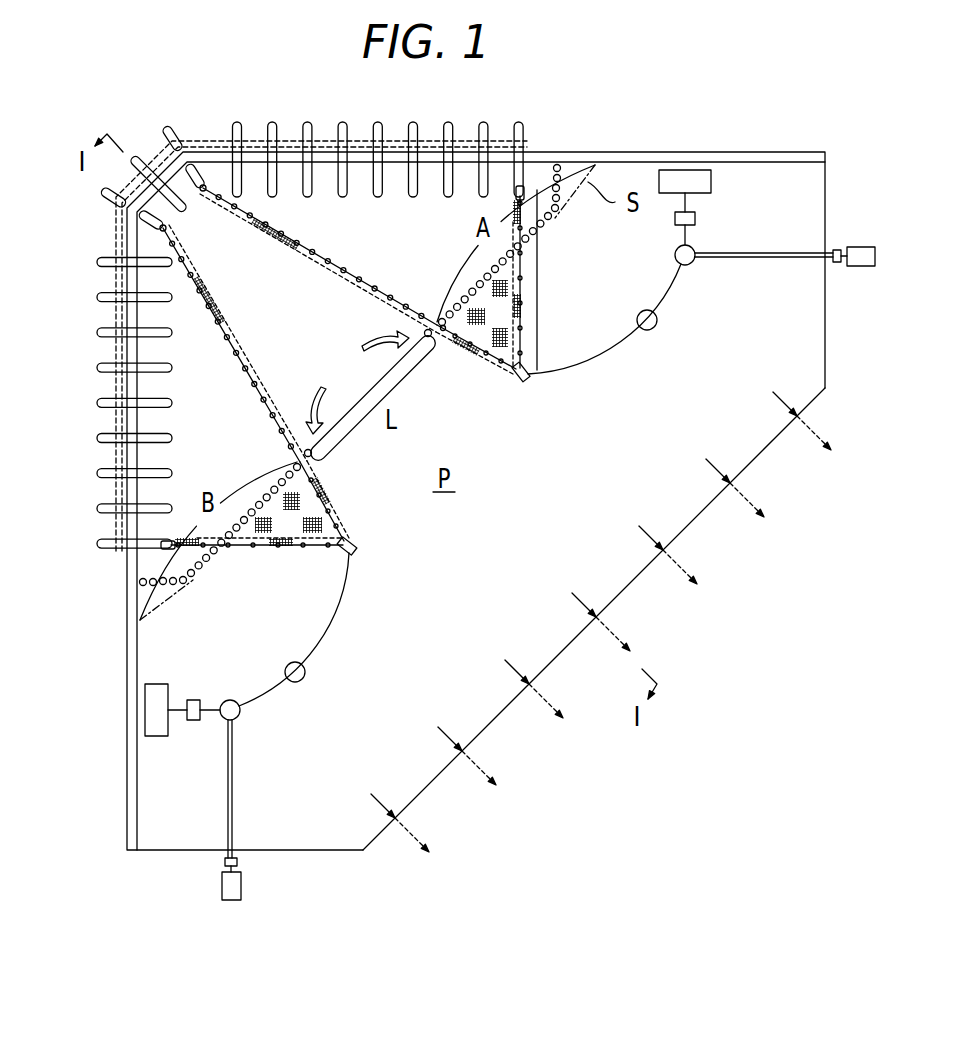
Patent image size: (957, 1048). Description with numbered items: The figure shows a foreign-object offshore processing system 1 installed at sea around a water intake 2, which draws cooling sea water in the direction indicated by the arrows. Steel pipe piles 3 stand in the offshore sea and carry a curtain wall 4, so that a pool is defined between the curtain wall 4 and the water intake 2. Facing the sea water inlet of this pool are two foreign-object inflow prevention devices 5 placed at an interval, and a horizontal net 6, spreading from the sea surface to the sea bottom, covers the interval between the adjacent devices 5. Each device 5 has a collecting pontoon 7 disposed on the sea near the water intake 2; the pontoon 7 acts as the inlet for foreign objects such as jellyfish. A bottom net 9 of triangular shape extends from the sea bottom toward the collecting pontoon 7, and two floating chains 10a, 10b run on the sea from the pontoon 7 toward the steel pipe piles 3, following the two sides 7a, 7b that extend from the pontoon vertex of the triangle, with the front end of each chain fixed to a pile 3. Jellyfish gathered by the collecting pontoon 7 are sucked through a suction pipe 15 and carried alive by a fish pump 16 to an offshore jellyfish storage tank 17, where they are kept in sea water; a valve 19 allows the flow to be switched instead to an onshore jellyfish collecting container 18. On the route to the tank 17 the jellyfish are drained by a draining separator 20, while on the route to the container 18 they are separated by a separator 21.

The foreign-object offshore processing system 1 is at (478, 458).
The water intake 2 is at (665, 522).
The steel pipe piles 3 is at (274, 121).
The curtain wall 4 is at (113, 313).
The foreign-object inflow prevention device 5 is at (537, 273).
The horizontal net 6 is at (374, 388).
The collecting pontoon 7 is at (527, 375).
The side of the triangular shape 7a is at (497, 362).
The side of the triangular shape 7b is at (527, 307).
The bottom net 9 is at (445, 338).
The floating chain 10a is at (524, 258).
The floating chain 10b is at (320, 257).
The suction pipe 15 is at (602, 356).
The fish pump 16 is at (657, 328).
The offshore jellyfish storage tank 17 is at (712, 182).
The onshore jellyfish collecting container 18 is at (860, 247).
The valve 19 is at (675, 253).
The draining separator 20 is at (695, 218).
The separator 21 is at (837, 263).